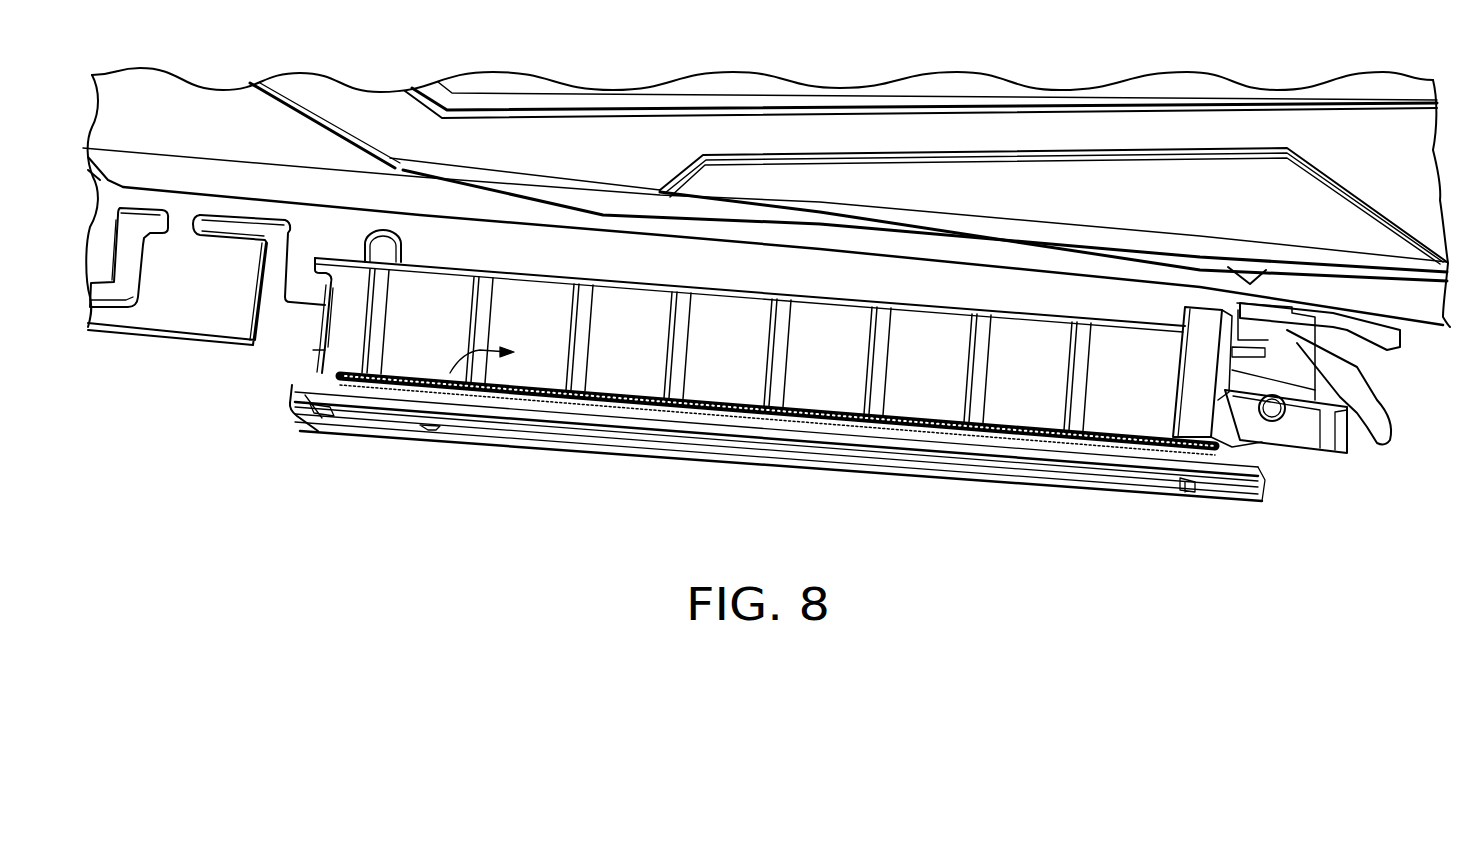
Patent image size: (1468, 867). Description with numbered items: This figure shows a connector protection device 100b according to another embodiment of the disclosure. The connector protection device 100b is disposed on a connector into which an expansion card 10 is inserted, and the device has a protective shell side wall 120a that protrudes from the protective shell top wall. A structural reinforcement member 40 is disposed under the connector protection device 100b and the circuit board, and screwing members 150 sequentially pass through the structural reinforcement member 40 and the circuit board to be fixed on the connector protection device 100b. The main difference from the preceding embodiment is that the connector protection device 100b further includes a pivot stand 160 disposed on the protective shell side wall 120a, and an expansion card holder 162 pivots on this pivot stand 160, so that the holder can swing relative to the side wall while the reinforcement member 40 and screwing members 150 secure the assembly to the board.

The expansion card 10 is at (295, 288).
The structural reinforcement member 40 is at (770, 463).
The connector protection device 100b is at (434, 393).
The protective shell side wall 120a is at (1223, 372).
The screwing member 150 is at (1187, 482).
The pivot stand 160 is at (1317, 433).
The expansion card holder 162 is at (1350, 380).